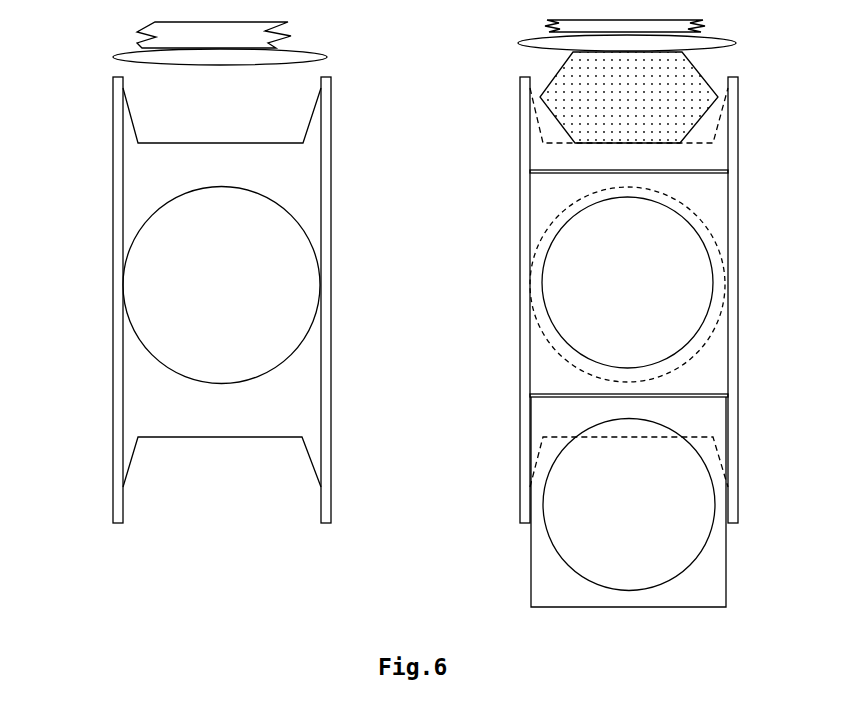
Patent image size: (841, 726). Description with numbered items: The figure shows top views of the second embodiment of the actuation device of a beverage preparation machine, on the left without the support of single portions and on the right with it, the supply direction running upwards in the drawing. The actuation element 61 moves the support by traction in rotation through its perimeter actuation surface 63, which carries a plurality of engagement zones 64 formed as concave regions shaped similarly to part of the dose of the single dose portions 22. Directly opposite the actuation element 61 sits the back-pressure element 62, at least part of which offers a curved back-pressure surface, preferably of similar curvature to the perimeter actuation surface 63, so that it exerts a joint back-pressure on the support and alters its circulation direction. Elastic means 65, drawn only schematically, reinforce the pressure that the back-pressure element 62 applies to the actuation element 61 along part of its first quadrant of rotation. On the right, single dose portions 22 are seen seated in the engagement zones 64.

The actuation element 61 is at (398, 298).
The back-pressure element 62 is at (310, 59).
The perimeter actuation surface 63 is at (132, 187).
The engagement zones 64 is at (165, 143).
The elastic means 65 is at (262, 33).
The single dose portion 22 is at (690, 108).